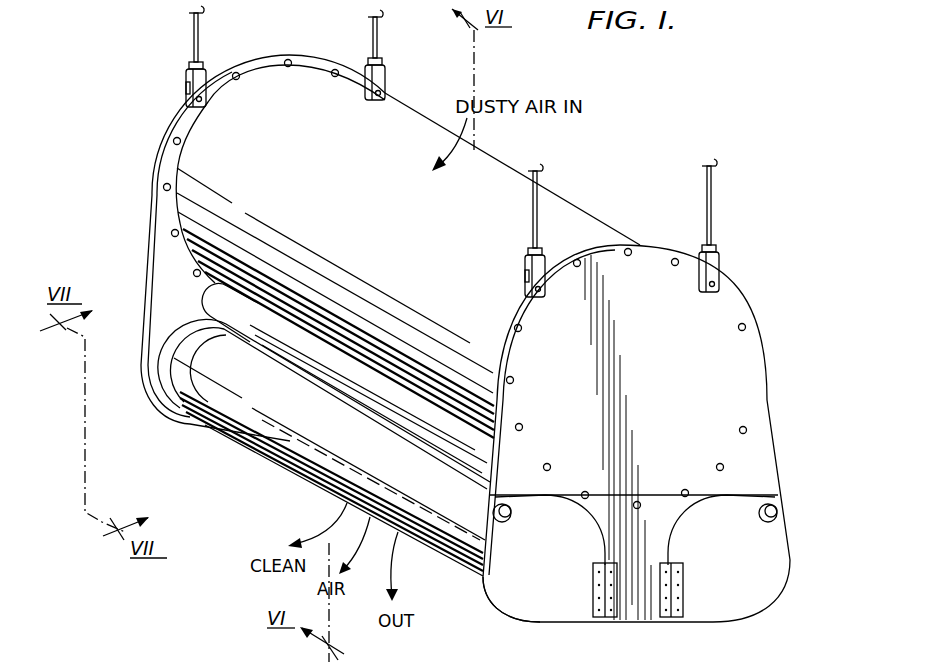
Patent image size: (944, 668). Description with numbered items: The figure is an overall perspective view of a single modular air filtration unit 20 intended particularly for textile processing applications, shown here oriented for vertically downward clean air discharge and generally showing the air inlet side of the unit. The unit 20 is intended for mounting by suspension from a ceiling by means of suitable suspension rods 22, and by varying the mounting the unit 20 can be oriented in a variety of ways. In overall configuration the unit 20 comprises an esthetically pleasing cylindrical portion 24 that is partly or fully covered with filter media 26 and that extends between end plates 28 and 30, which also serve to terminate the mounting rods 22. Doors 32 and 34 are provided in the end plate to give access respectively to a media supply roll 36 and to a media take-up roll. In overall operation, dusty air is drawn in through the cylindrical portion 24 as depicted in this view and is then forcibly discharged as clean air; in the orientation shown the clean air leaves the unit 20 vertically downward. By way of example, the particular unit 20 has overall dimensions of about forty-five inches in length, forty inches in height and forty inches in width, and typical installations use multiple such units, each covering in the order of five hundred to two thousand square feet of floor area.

The modular air filtration unit 20 is at (658, 148).
The suspension rods 22 is at (193, 36).
The cylindrical portion 24 is at (551, 177).
The filter media 26 is at (408, 130).
The end plate 28 is at (768, 435).
The end plate 30 is at (160, 261).
The door 32 is at (511, 590).
The door 34 is at (777, 580).
The media supply roll 36 is at (290, 467).